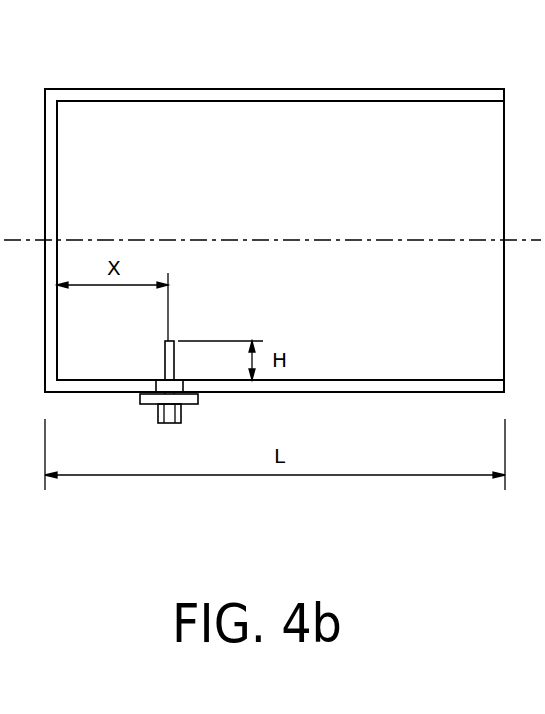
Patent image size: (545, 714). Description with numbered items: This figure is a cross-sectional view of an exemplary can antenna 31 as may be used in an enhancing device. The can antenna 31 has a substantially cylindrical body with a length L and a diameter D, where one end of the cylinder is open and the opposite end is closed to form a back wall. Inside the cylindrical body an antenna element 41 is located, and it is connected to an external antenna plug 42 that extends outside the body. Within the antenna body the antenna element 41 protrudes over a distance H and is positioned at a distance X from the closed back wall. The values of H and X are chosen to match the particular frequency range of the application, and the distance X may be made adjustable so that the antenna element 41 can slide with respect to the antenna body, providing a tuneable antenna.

The can antenna 31 is at (407, 89).
The antenna element 41 is at (163, 356).
The external antenna plug 42 is at (155, 416).